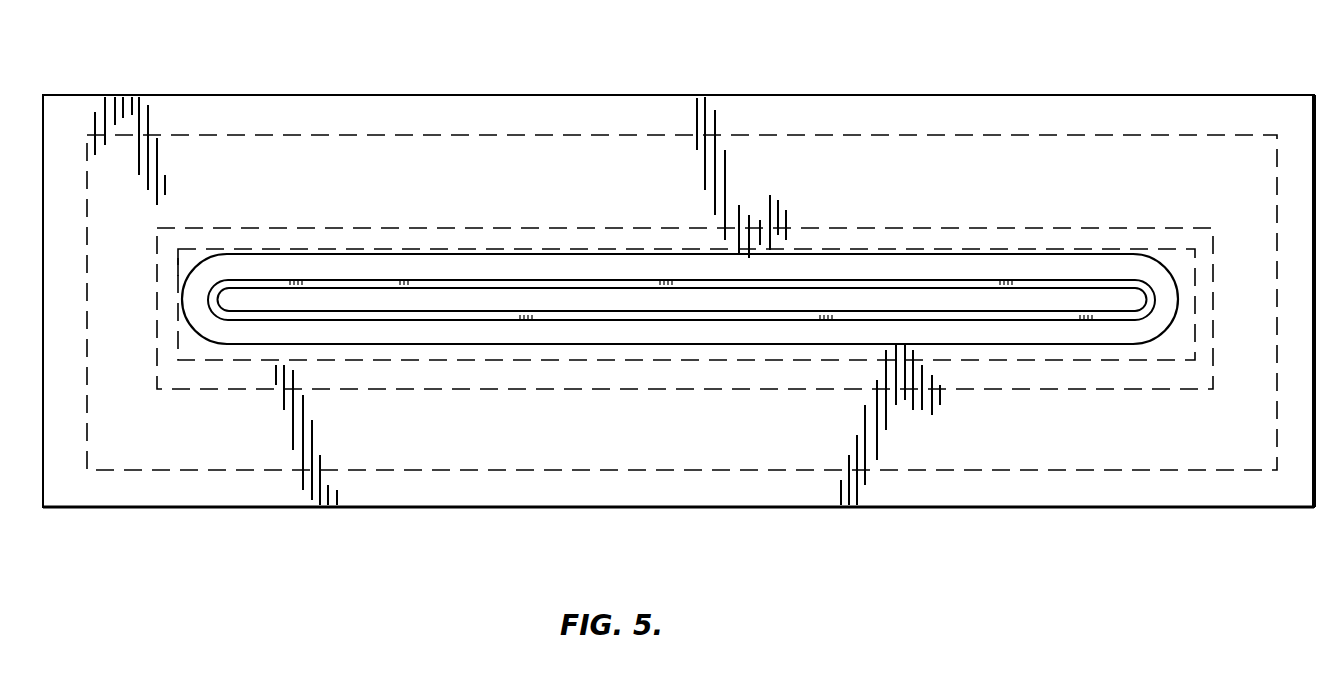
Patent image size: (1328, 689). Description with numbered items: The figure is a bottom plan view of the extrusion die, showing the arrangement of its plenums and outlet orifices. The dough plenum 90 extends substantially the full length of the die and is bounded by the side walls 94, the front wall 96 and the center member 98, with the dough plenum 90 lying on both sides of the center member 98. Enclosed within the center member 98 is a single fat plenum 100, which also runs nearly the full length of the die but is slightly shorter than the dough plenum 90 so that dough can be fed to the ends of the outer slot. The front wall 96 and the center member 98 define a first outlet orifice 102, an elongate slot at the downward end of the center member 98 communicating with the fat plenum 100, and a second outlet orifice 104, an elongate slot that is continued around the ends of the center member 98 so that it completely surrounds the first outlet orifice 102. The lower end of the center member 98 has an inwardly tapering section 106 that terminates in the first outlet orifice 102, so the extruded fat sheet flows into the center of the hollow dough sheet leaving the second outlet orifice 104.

The dough plenum 90 is at (395, 190).
The side walls 94 is at (385, 120).
The front wall 96 is at (1168, 125).
The center member 98 is at (200, 243).
The fat plenum 100 is at (178, 270).
The first outlet orifice 102 is at (1142, 300).
The second outlet orifice 104 is at (1140, 268).
The inwardly tapering section 106 is at (1143, 284).